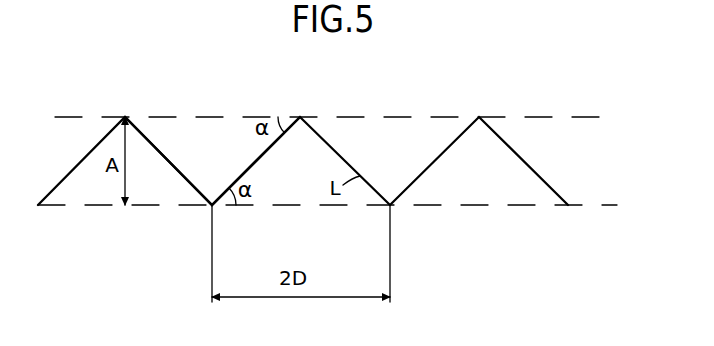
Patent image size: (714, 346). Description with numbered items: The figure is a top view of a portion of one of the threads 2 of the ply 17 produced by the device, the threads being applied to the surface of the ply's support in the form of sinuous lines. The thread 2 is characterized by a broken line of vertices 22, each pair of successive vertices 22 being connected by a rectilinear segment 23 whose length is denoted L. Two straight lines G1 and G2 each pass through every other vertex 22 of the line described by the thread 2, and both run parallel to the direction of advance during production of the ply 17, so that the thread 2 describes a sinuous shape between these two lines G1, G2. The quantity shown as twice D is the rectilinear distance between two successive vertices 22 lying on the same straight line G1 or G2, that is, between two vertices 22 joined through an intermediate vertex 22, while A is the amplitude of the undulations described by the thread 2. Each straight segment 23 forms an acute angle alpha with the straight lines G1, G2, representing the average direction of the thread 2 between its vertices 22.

The thread 2 is at (337, 153).
The ply 17 is at (363, 97).
The vertex 22 is at (125, 117).
The rectilinear segment 23 is at (238, 180).
The straight line G1 is at (570, 117).
The straight line G2 is at (603, 208).